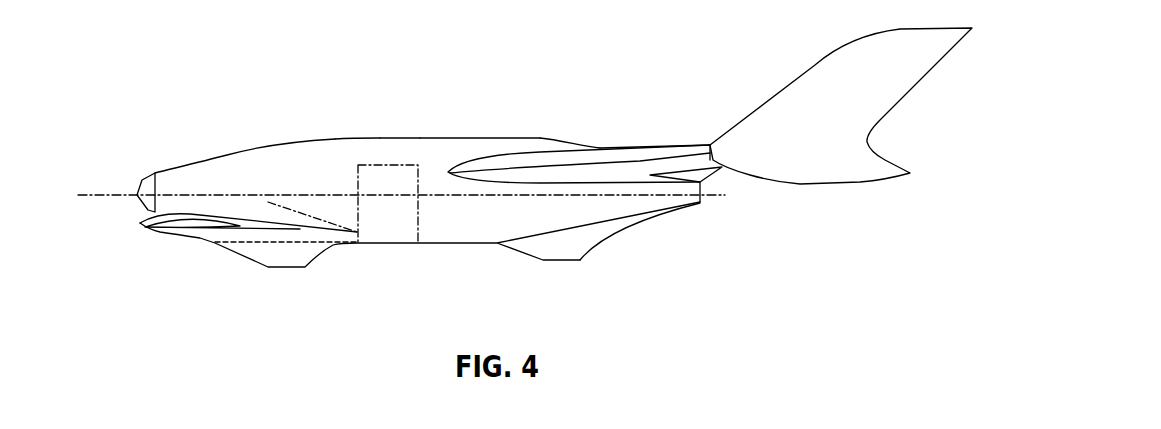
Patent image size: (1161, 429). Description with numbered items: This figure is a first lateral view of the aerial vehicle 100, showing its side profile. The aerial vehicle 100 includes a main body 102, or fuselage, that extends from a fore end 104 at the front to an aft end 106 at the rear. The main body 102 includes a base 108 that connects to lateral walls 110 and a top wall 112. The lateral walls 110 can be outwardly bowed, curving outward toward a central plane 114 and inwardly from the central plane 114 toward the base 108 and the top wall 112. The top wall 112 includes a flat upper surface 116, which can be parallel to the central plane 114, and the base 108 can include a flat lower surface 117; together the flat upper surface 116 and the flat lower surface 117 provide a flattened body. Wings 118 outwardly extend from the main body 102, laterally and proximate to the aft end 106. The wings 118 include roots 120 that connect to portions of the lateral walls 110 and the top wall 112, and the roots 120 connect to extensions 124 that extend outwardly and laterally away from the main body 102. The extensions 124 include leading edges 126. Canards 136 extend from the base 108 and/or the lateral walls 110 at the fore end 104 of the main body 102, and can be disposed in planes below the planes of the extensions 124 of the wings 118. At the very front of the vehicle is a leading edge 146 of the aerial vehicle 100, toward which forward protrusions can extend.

The aerial vehicle 100 is at (185, 72).
The main body 102 is at (362, 138).
The fore end 104 is at (223, 158).
The aft end 106 is at (702, 202).
The base 108 is at (470, 245).
The lateral walls 110 is at (436, 157).
The top wall 112 is at (330, 137).
The central plane 114 is at (610, 195).
The flat upper surface 116 is at (404, 138).
The flat lower surface 117 is at (388, 245).
The wings 118 is at (672, 145).
The roots 120 is at (490, 158).
The extensions 124 is at (630, 145).
The leading edges 126 is at (578, 165).
The canards 136 is at (168, 228).
The leading edge 146 is at (140, 224).